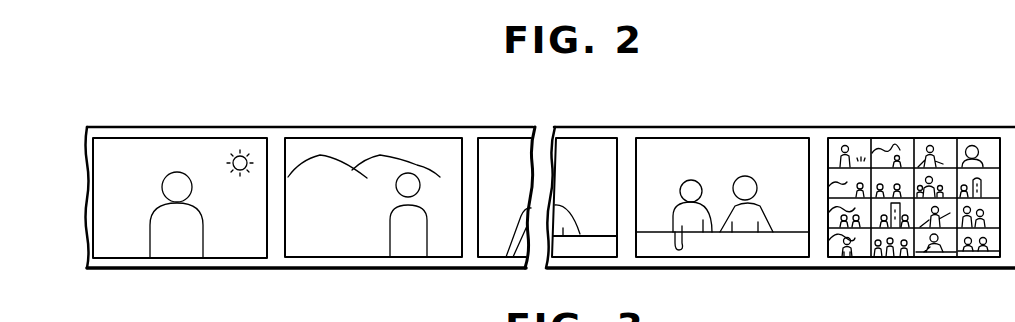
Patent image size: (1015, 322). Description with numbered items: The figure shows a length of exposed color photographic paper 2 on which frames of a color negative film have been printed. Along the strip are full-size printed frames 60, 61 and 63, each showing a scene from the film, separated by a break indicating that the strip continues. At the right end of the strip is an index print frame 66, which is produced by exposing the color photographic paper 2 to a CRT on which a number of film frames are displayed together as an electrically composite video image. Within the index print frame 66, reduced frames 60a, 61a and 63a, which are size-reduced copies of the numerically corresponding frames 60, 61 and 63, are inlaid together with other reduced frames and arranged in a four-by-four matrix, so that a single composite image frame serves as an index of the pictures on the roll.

The color photographic paper 2 is at (629, 145).
The frame 60 is at (186, 148).
The frame 61 is at (368, 148).
The frame 63 is at (734, 148).
The index print frame 66 is at (909, 189).
The reduced frame 60a is at (834, 146).
The reduced frame 61a is at (876, 145).
The reduced frame 63a is at (984, 255).